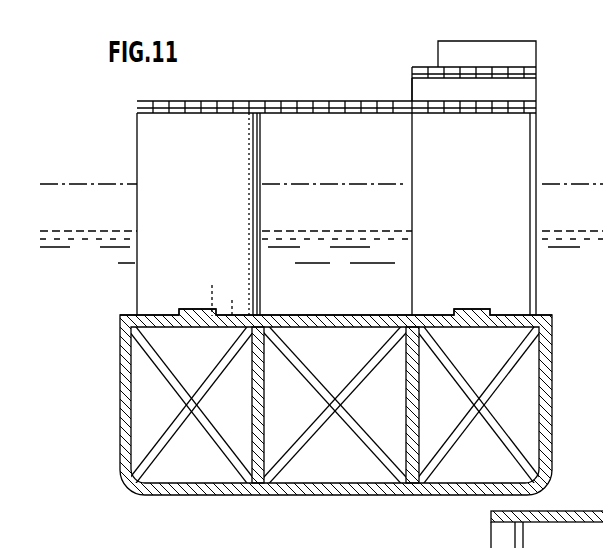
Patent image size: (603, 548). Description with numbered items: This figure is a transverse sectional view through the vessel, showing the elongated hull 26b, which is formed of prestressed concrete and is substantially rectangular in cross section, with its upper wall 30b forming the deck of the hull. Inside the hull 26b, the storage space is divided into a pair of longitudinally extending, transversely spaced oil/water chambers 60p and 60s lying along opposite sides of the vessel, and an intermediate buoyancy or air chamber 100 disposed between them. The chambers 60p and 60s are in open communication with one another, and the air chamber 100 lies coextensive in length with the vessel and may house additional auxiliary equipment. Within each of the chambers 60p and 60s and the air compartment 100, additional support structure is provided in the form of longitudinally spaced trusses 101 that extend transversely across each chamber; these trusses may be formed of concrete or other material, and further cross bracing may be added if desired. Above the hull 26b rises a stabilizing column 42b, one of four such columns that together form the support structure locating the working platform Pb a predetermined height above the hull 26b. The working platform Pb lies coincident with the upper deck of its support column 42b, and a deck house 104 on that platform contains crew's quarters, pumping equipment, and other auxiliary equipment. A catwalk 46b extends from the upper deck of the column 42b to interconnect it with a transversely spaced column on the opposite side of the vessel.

The deck house 104 is at (535, 86).
The stabilizing column 42b is at (535, 133).
The catwalk 46b is at (310, 117).
The working platform Pb is at (432, 109).
The upper wall 30b is at (330, 316).
The hull 26b is at (342, 496).
The oil/water chamber 60p is at (198, 359).
The oil/water chamber 60s is at (487, 359).
The buoyancy chamber 100 is at (348, 359).
The truss 101 is at (310, 432).